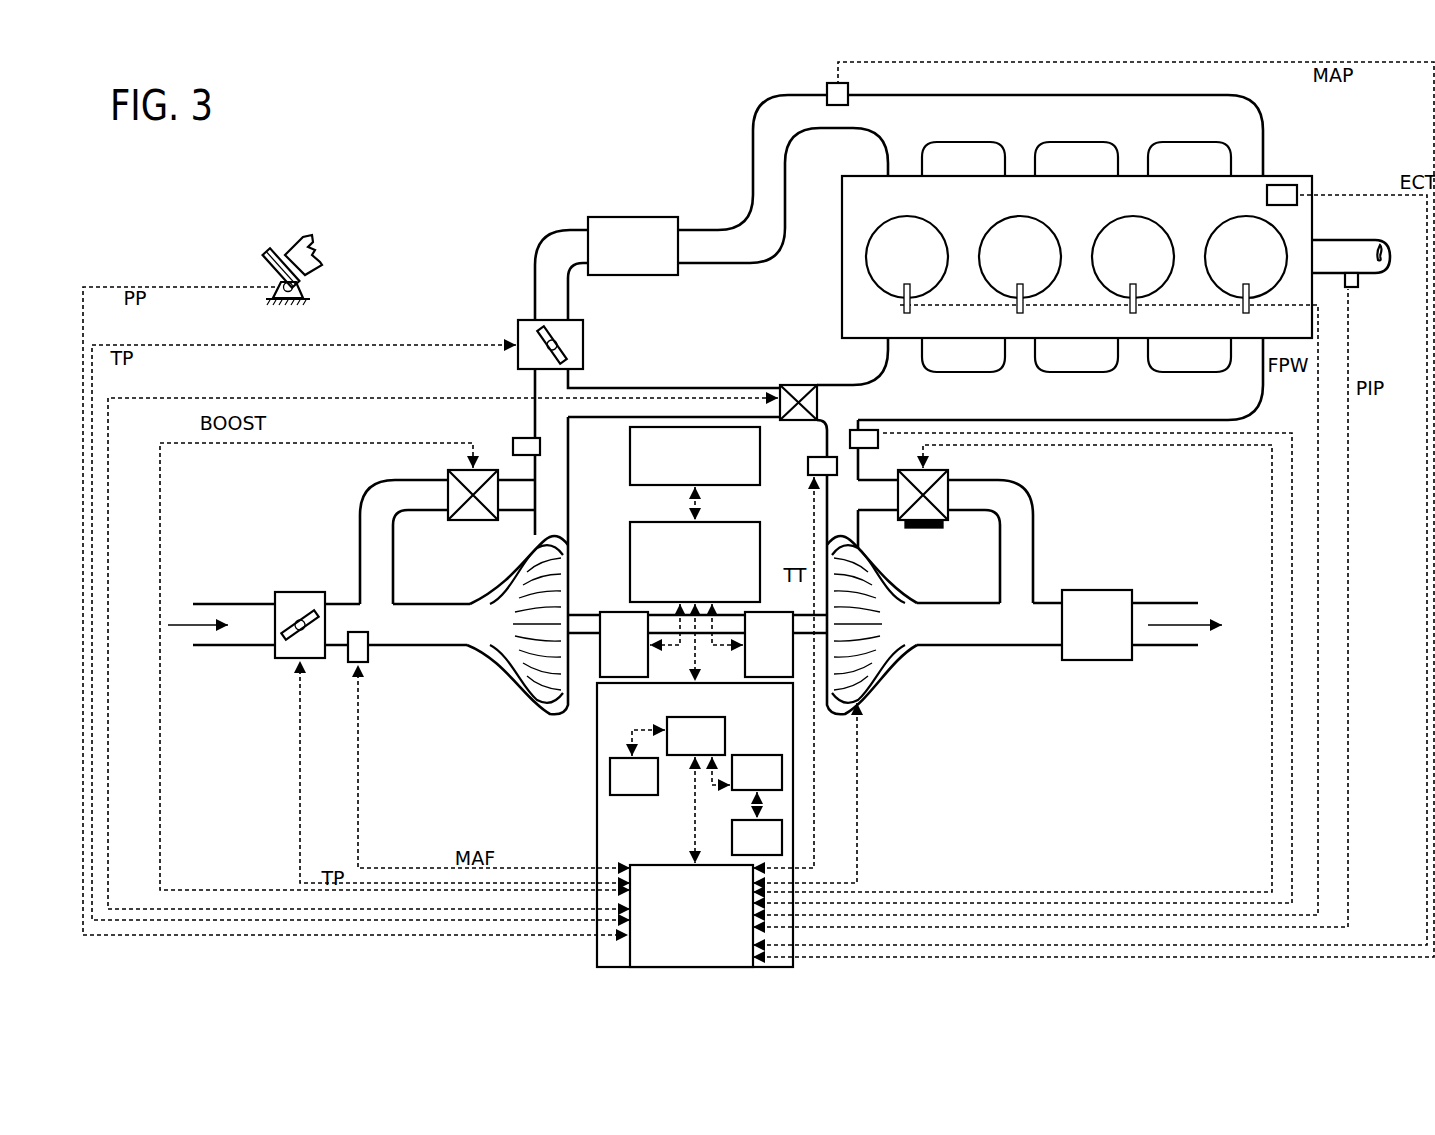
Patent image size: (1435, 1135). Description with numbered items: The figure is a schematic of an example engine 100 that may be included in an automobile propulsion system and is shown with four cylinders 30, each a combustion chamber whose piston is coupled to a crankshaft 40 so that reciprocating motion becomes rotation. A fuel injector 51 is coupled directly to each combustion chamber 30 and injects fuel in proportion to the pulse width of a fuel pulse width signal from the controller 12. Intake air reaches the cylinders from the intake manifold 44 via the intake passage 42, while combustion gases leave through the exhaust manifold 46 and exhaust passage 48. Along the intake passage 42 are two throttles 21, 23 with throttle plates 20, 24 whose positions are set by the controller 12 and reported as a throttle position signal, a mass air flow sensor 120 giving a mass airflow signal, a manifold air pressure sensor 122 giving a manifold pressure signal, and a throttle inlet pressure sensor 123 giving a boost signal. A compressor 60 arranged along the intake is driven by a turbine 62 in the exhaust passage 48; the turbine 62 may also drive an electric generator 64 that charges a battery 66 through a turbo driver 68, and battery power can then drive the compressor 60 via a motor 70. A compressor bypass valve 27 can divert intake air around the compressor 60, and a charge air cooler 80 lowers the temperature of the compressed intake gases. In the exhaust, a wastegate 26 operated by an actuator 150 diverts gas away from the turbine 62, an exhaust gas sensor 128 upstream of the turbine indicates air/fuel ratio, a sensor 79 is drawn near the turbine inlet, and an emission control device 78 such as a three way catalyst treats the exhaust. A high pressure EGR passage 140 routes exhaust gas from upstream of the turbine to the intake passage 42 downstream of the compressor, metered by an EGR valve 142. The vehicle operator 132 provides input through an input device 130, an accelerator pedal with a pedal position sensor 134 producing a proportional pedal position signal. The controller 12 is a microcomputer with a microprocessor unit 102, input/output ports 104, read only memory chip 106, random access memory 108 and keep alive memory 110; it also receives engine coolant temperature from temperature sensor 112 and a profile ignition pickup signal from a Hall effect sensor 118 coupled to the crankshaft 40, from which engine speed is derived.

The controller 12 is at (627, 836).
The throttle plate 20 is at (305, 612).
The throttle 21 is at (290, 592).
The throttle 23 is at (520, 320).
The throttle plate 24 is at (562, 345).
The wastegate 26 is at (948, 478).
The compressor bypass valve 27 is at (448, 478).
The cylinder 30 is at (896, 268).
The crankshaft 40 is at (1358, 240).
The intake passage 42 is at (242, 636).
The intake manifold 44 is at (945, 130).
The exhaust manifold 46 is at (893, 409).
The exhaust passage 48 is at (974, 636).
The fuel injector 51 is at (905, 312).
The compressor 60 is at (522, 688).
The turbine 62 is at (870, 572).
The electric generator 64 is at (756, 651).
The battery 66 is at (630, 464).
The turbo driver 68 is at (742, 522).
The motor 70 is at (611, 651).
The emission control device 78 is at (1086, 636).
The turbine temperature sensor 79 is at (808, 464).
The charge air cooler 80 is at (600, 217).
The engine 100 is at (1170, 208).
The microprocessor unit 102 is at (632, 728).
The input/output ports 104 is at (706, 946).
The read only memory chip 106 is at (610, 780).
The random access memory 108 is at (738, 755).
The keep alive memory 110 is at (732, 838).
The temperature sensor 112 is at (1290, 185).
The Hall effect sensor 118 is at (1358, 285).
The mass air flow sensor 120 is at (368, 650).
The manifold air pressure sensor 122 is at (827, 92).
The throttle inlet pressure sensor 123 is at (513, 442).
The exhaust gas sensor 128 is at (873, 454).
The input device 130 is at (268, 262).
The vehicle operator 132 is at (322, 252).
The pedal position sensor 134 is at (302, 287).
The EGR passage 140 is at (683, 388).
The EGR valve 142 is at (800, 385).
The actuator 150 is at (937, 528).